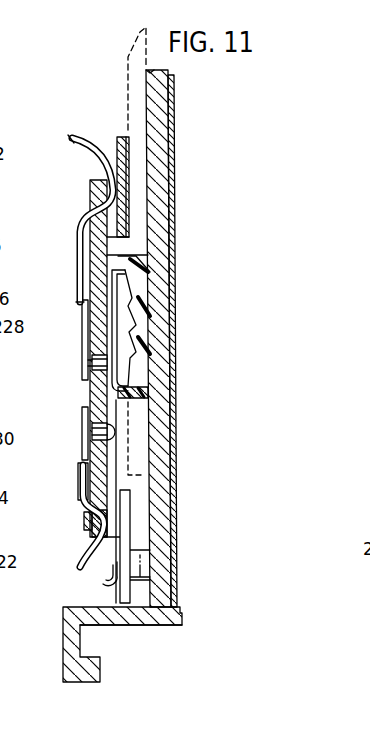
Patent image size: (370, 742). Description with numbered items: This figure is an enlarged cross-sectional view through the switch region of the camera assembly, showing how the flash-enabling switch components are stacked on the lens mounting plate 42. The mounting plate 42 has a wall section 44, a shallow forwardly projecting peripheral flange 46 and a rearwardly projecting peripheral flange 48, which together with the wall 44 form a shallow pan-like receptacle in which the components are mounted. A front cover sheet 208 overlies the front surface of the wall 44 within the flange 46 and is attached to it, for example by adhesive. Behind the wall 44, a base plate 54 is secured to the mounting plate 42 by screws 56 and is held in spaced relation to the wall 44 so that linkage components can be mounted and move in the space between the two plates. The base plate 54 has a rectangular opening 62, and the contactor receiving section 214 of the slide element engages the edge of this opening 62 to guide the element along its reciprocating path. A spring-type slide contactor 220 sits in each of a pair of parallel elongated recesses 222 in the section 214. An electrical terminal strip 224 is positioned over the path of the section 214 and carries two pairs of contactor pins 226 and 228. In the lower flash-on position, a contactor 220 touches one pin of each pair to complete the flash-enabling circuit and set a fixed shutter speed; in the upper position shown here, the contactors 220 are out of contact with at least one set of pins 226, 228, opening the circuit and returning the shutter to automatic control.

The lens mounting plate 42 is at (178, 140).
The wall section 44 is at (164, 278).
The forwardly projecting peripheral flange 46 is at (183, 622).
The rearwardly projecting peripheral flange 48 is at (107, 621).
The base plate 54 is at (130, 203).
The screws 56 is at (105, 582).
The rectangular opening 62 is at (132, 247).
The front cover sheet 208 is at (172, 555).
The contactor receiving section 214 is at (142, 262).
The spring-type slide contactor 220 is at (133, 364).
The elongated recesses 222 is at (133, 324).
The electrical terminal strip 224 is at (92, 235).
The contactor pins 226 is at (117, 391).
The contactor pins 228 is at (114, 431).